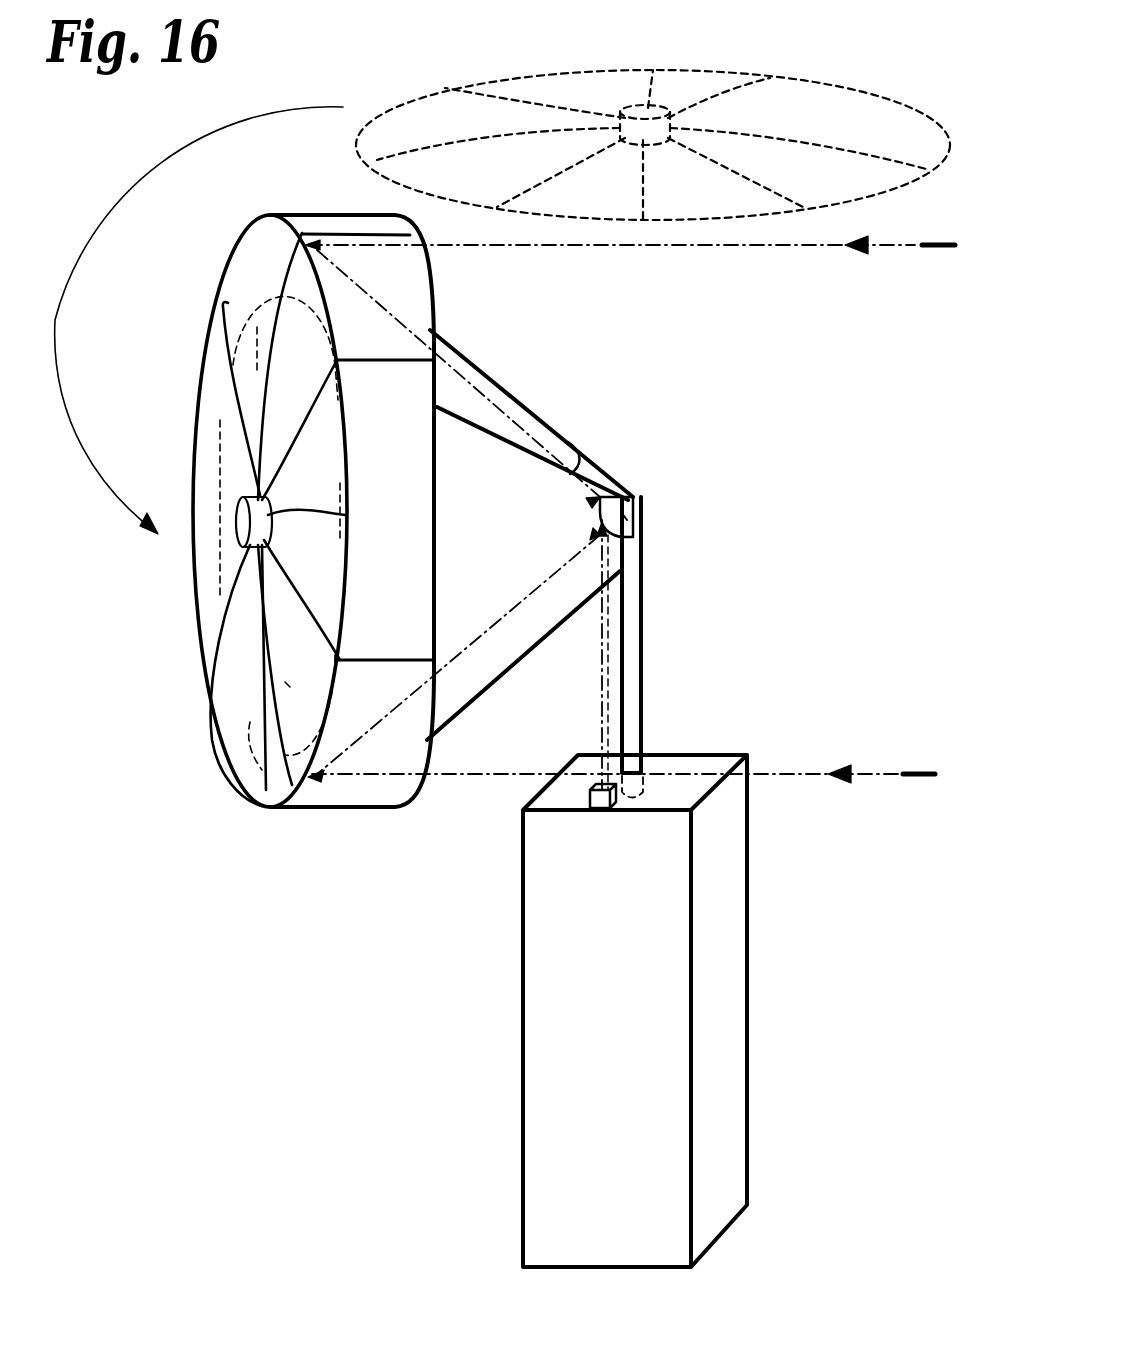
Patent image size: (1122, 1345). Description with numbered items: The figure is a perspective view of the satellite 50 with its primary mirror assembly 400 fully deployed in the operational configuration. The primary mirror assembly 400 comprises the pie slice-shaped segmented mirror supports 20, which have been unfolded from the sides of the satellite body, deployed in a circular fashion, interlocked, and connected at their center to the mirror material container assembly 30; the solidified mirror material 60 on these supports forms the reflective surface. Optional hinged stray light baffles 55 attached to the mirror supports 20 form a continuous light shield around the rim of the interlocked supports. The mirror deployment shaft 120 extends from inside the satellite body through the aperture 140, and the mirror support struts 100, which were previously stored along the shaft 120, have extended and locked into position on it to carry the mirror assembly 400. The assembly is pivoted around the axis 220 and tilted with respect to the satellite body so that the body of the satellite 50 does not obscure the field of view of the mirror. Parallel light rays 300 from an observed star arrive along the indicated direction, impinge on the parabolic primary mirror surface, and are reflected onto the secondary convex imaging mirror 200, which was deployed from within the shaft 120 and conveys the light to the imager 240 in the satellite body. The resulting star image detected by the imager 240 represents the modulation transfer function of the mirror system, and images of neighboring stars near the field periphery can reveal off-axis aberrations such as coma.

The segmented mirror supports 20 is at (162, 700).
The mirror material container assembly 30 is at (240, 528).
The satellite 50 is at (262, 1100).
The hinged stray light baffles 55 is at (313, 511).
The solidified mirror material 60 is at (250, 782).
The mirror support struts 100 is at (545, 412).
The mirror deployment shaft 120 is at (636, 600).
The aperture 140 is at (645, 772).
The secondary convex imaging mirror 200 is at (637, 497).
The axis 220 is at (638, 548).
The imager 240 is at (590, 790).
The light rays 300 is at (600, 673).
The primary mirror assembly 400 is at (790, 80).